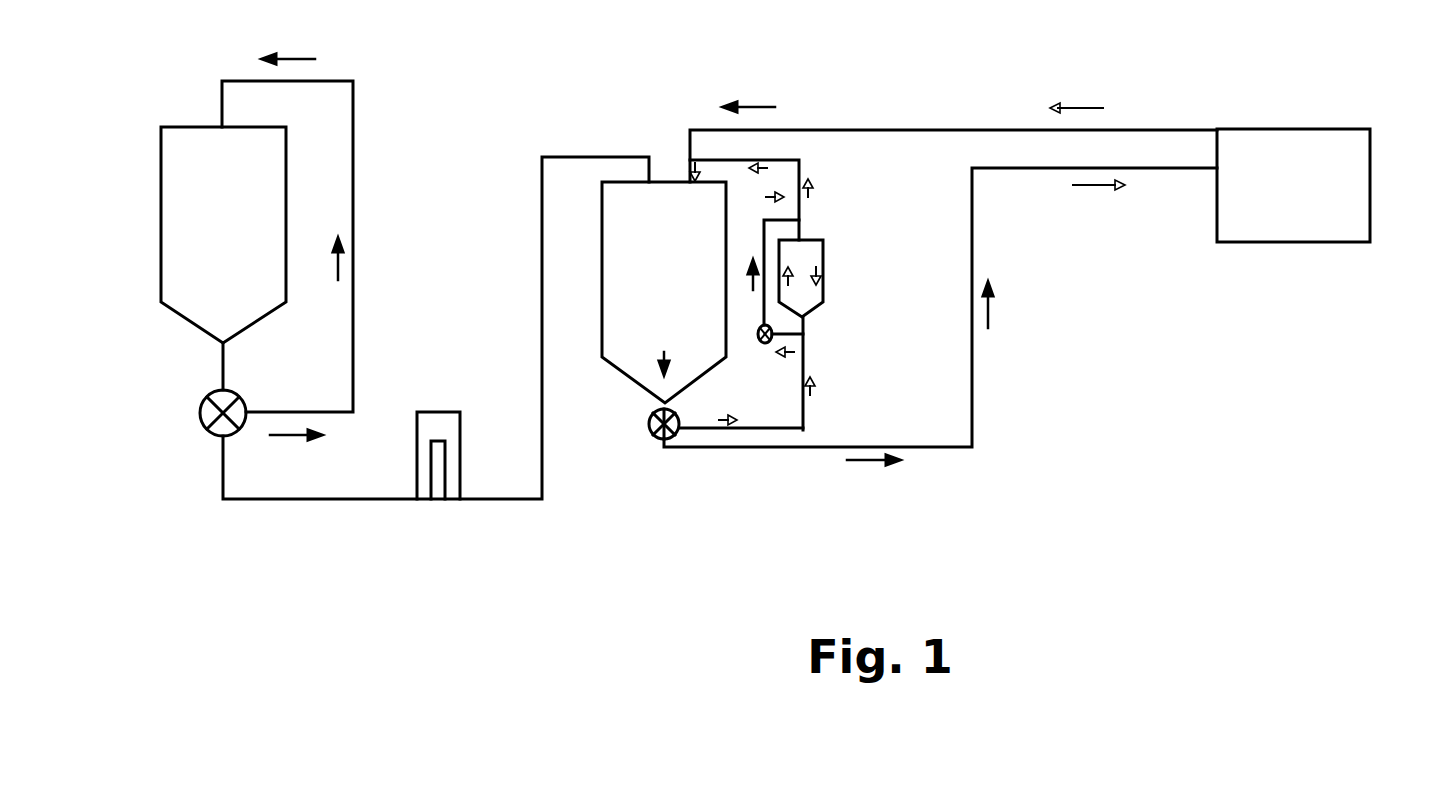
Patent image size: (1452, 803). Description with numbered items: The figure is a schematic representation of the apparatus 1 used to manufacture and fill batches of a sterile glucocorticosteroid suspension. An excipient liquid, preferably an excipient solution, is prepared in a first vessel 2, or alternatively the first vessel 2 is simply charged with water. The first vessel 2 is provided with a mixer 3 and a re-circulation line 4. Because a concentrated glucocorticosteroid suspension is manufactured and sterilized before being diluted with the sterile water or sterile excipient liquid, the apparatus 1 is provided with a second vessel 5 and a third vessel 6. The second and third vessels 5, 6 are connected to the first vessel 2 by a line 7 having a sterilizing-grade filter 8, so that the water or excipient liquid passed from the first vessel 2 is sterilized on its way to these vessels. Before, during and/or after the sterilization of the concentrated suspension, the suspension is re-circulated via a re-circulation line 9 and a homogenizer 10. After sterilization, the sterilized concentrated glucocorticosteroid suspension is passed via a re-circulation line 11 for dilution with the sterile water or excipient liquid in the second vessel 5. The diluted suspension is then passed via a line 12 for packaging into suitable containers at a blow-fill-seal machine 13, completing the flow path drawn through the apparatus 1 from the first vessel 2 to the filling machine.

The apparatus 1 is at (1016, 82).
The first vessel 2 is at (203, 191).
The mixer 3 is at (212, 419).
The re-circulation line 4 is at (355, 229).
The second vessel 5 is at (659, 229).
The third vessel 6 is at (803, 250).
The line 7 is at (546, 456).
The sterilizing-grade filter 8 is at (430, 437).
The re-circulation line 9 is at (806, 336).
The homogenizer 10 is at (763, 345).
The re-circulation line 11 is at (762, 148).
The line 12 is at (1132, 170).
The blow-fill-seal (BFS) machine 13 is at (1337, 207).